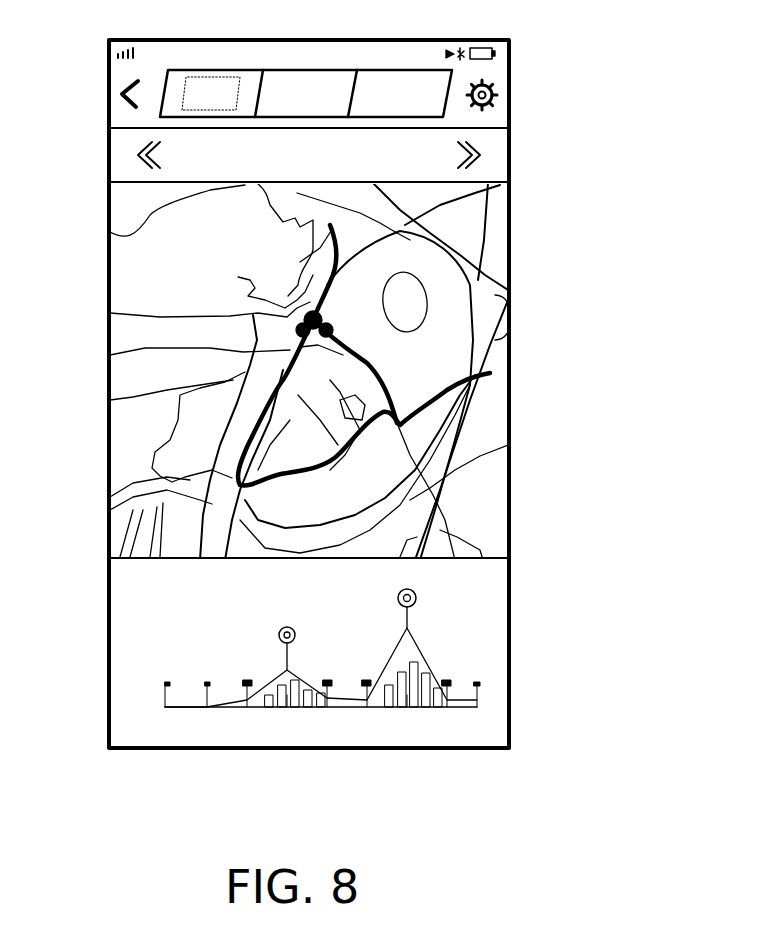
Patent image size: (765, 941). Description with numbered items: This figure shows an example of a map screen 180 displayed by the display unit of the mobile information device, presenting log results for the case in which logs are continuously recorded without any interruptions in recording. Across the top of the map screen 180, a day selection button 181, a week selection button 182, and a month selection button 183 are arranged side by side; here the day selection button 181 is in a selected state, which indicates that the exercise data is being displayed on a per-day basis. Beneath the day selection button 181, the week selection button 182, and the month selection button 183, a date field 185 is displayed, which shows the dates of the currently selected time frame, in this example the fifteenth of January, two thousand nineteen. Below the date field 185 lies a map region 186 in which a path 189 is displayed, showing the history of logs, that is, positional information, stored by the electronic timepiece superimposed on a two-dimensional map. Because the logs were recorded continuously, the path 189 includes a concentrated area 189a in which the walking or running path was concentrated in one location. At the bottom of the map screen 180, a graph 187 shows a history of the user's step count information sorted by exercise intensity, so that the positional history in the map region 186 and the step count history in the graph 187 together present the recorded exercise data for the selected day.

The map screen 180 is at (424, 41).
The day selection button 181 is at (134, 108).
The week selection button 182 is at (345, 68).
The month selection button 183 is at (420, 119).
The date field 185 is at (425, 160).
The map region 186 is at (525, 190).
The graph 187 is at (525, 563).
The path 189 is at (115, 356).
The concentrated area 189a is at (115, 313).